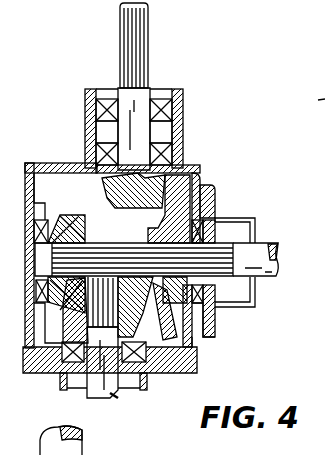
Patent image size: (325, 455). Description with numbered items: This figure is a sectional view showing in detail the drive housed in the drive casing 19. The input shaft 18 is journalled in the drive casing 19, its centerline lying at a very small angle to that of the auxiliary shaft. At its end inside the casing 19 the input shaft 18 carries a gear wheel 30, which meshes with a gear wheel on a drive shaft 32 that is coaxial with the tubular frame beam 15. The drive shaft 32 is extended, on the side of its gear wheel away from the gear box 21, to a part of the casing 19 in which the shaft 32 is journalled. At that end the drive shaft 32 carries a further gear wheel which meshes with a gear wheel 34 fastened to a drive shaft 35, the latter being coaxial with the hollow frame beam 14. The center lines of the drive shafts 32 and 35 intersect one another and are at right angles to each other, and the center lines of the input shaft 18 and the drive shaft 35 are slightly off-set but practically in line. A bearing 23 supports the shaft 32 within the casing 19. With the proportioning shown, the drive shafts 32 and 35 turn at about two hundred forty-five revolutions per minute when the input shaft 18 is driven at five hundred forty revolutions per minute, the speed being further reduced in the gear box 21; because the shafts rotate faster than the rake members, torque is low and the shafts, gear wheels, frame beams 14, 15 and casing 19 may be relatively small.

The hollow frame beam 14 is at (80, 392).
The tubular frame beam 15 is at (245, 228).
The input shaft 18 is at (137, 52).
The drive casing 19 is at (45, 163).
The gear box 21 is at (155, 229).
The bearing 23 is at (85, 217).
The gear wheel 30 is at (100, 189).
The drive shaft 32 is at (278, 250).
The gear wheel 34 is at (73, 330).
The drive shaft 35 is at (102, 398).